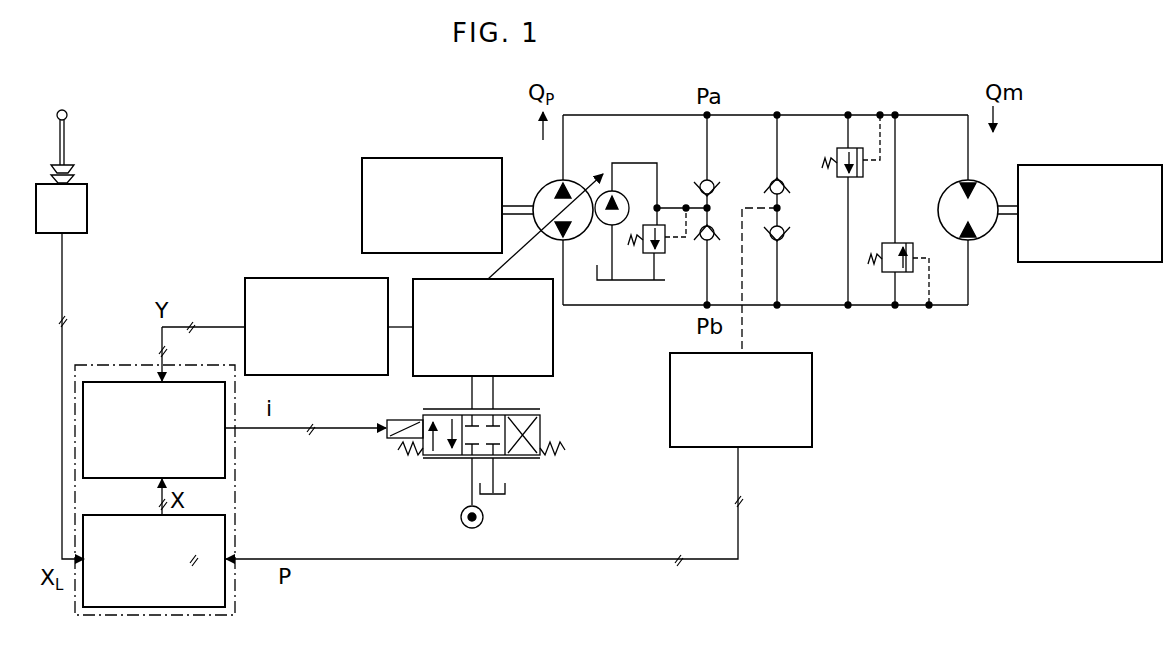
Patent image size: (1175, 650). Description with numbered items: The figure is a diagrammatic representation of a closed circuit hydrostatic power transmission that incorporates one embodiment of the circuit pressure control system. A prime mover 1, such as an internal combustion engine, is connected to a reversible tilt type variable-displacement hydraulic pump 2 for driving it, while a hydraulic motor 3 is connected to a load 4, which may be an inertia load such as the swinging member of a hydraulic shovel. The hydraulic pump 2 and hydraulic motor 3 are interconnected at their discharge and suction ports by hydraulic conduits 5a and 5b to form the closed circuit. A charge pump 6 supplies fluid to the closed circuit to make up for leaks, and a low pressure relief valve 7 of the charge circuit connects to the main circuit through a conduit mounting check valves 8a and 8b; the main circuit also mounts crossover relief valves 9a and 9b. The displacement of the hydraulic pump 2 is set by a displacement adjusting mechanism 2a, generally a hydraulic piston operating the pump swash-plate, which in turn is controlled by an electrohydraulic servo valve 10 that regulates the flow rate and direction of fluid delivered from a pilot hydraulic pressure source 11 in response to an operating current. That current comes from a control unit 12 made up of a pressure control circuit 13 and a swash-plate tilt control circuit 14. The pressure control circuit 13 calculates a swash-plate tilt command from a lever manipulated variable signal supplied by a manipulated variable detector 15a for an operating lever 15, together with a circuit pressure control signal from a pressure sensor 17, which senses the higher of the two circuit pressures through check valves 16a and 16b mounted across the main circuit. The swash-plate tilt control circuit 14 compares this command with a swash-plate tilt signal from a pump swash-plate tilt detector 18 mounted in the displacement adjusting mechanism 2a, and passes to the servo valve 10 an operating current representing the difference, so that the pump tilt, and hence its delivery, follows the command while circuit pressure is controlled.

The prime mover 1 is at (466, 157).
The variable-displacement hydraulic pump 2 is at (545, 184).
The displacement adjusting mechanism 2a is at (553, 330).
The hydraulic motor 3 is at (948, 188).
The load 4 is at (1090, 164).
The hydraulic conduit 5a is at (803, 114).
The hydraulic conduit 5b is at (804, 309).
The charge pump 6 is at (623, 194).
The low pressure relief valve 7 is at (666, 258).
The check valve 8a is at (700, 180).
The check valve 8b is at (722, 246).
The crossover relief valve 9a is at (840, 178).
The crossover relief valve 9b is at (891, 243).
The servo valve 10 is at (541, 432).
The pilot hydraulic pressure source 11 is at (461, 512).
The control unit 12 is at (238, 451).
The pressure control circuit 13 is at (187, 607).
The swash-plate tilt control circuit 14 is at (118, 367).
The operating lever 15 is at (66, 148).
The manipulated variable detector 15a is at (87, 213).
The check valve 16a is at (770, 190).
The check valve 16b is at (787, 237).
The pressure sensor 17 is at (812, 386).
The pump swash-plate tilt detector 18 is at (324, 278).